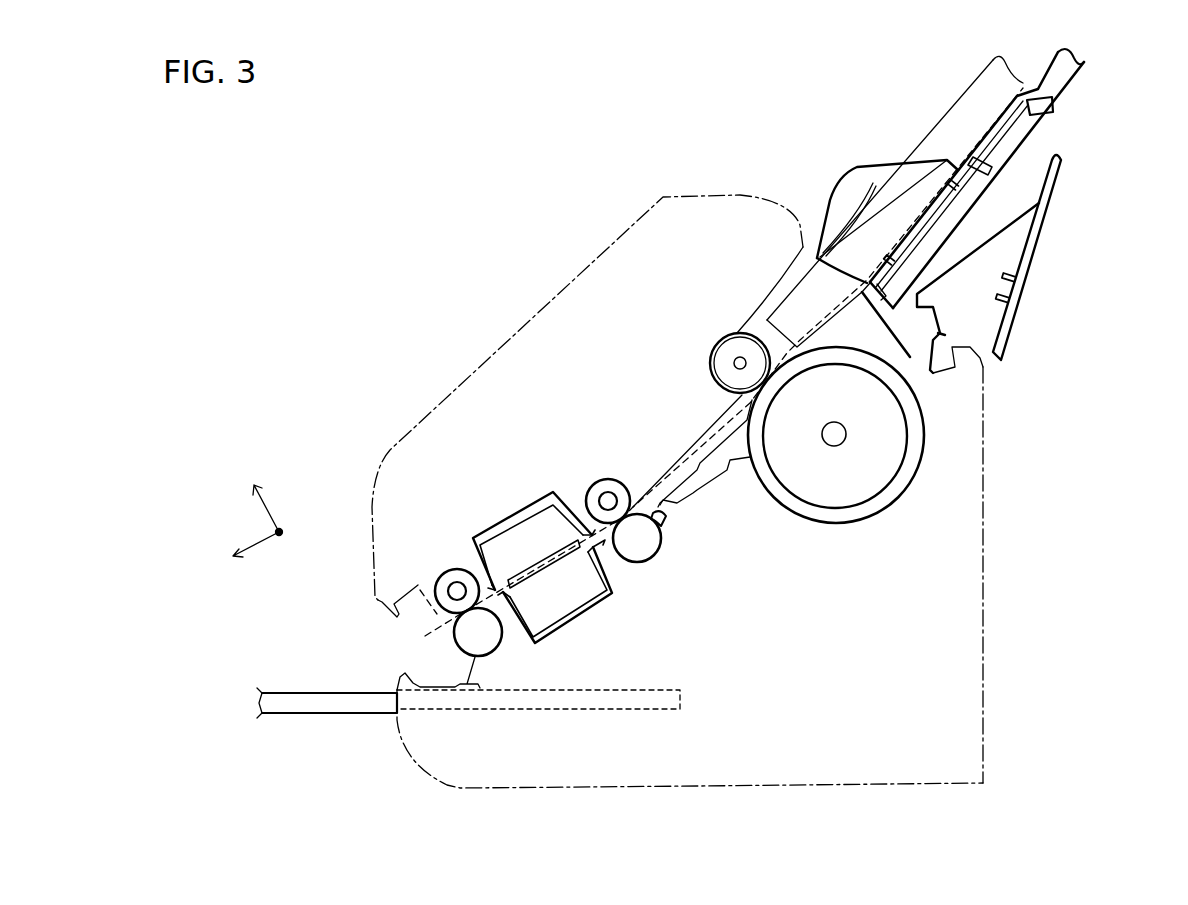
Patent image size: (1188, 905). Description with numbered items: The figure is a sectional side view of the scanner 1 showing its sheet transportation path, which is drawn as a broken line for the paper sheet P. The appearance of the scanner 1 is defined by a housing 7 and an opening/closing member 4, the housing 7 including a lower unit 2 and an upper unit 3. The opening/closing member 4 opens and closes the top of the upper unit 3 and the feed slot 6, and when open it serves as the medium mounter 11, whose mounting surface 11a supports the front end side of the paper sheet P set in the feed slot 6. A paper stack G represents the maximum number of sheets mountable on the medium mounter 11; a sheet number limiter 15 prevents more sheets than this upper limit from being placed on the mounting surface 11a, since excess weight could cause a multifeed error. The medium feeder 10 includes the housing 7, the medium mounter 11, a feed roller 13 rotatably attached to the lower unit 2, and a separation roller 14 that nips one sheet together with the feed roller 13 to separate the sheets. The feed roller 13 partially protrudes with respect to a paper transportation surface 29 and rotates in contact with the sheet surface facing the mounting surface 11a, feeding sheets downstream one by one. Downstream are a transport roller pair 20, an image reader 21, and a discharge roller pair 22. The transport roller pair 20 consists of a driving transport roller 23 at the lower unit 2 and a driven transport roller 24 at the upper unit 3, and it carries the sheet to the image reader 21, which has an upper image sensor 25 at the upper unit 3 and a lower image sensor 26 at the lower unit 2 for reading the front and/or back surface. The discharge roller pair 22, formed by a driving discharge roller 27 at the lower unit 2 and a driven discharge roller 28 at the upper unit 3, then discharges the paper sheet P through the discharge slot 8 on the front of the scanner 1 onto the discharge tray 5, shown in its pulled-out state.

The scanner 1 is at (485, 200).
The lower unit 2 is at (984, 472).
The upper unit 3 is at (512, 333).
The opening/closing member 4 is at (1148, 92).
The discharge tray 5 is at (297, 692).
The feed slot 6 is at (803, 222).
The housing 7 is at (738, 491).
The discharge slot 8 is at (398, 645).
The medium feeder 10 is at (634, 306).
The medium mounter 11 is at (1035, 138).
The mounting surface 11a is at (1040, 118).
The feed roller 13 is at (893, 500).
The separation roller 14 is at (710, 362).
The sheet number limiter 15 is at (846, 184).
The transport roller pair 20 is at (660, 497).
The image reader 21 is at (568, 551).
The discharge roller pair 22 is at (500, 591).
The driving transport roller 23 is at (663, 540).
The driven transport roller 24 is at (606, 480).
The upper image sensor 25 is at (527, 527).
The lower image sensor 26 is at (578, 600).
The driving discharge roller 27 is at (498, 636).
The driven discharge roller 28 is at (456, 569).
The paper transportation surface 29 is at (827, 327).
The paper stack G is at (923, 150).
The paper sheet P is at (710, 478).